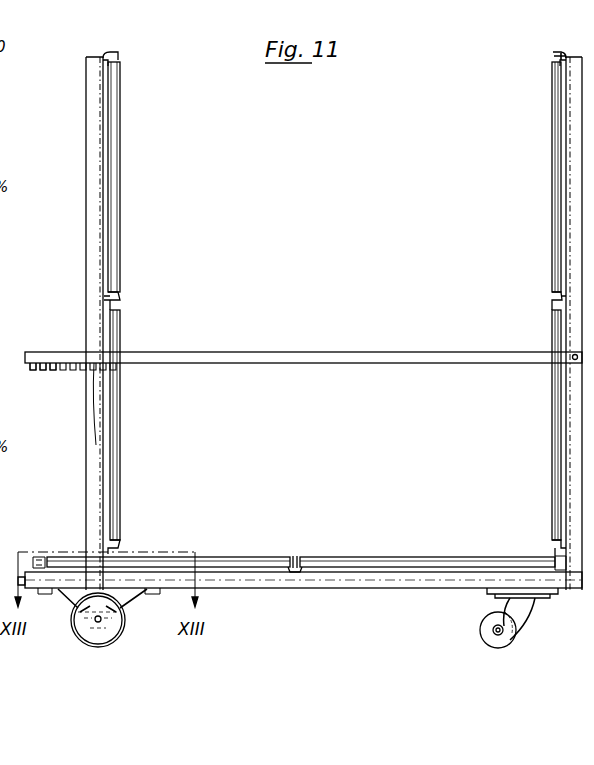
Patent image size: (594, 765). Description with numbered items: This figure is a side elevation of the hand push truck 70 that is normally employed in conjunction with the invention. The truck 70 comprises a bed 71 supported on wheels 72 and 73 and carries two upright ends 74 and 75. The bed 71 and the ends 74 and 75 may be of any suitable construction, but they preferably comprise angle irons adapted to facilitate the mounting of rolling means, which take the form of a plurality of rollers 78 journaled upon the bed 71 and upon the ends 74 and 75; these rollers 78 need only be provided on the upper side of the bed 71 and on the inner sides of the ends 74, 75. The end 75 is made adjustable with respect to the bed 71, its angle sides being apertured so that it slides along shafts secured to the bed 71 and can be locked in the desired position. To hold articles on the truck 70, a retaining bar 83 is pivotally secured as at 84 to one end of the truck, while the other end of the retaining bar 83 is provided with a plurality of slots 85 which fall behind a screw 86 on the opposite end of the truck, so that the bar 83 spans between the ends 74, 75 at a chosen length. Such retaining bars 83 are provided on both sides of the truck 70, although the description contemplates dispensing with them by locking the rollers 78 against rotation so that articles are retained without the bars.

The hand push truck 70 is at (436, 592).
The bed 71 is at (336, 582).
The wheel 72 is at (112, 632).
The wheel 73 is at (497, 646).
The end 74 is at (560, 166).
The end 75 is at (98, 526).
The rollers 78 is at (122, 494).
The retaining bar 83 is at (415, 364).
The pivot 84 is at (573, 360).
The slots 85 is at (58, 370).
The screw 86 is at (96, 425).